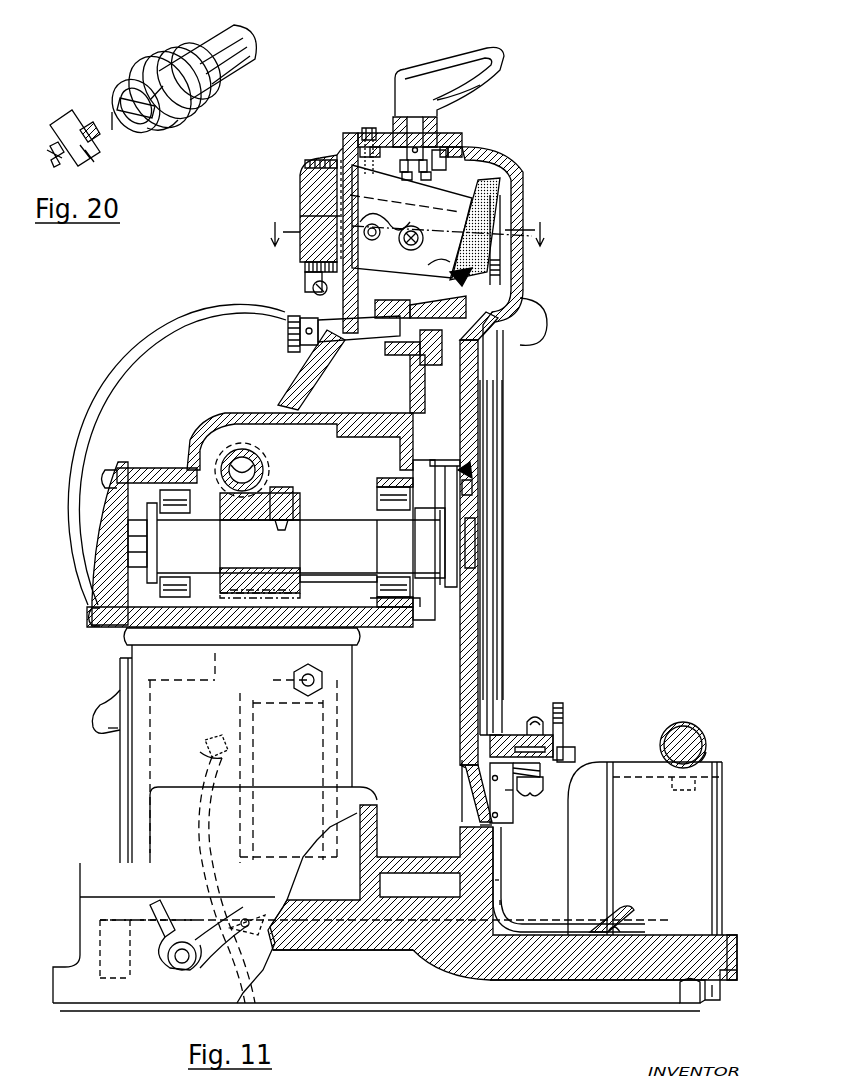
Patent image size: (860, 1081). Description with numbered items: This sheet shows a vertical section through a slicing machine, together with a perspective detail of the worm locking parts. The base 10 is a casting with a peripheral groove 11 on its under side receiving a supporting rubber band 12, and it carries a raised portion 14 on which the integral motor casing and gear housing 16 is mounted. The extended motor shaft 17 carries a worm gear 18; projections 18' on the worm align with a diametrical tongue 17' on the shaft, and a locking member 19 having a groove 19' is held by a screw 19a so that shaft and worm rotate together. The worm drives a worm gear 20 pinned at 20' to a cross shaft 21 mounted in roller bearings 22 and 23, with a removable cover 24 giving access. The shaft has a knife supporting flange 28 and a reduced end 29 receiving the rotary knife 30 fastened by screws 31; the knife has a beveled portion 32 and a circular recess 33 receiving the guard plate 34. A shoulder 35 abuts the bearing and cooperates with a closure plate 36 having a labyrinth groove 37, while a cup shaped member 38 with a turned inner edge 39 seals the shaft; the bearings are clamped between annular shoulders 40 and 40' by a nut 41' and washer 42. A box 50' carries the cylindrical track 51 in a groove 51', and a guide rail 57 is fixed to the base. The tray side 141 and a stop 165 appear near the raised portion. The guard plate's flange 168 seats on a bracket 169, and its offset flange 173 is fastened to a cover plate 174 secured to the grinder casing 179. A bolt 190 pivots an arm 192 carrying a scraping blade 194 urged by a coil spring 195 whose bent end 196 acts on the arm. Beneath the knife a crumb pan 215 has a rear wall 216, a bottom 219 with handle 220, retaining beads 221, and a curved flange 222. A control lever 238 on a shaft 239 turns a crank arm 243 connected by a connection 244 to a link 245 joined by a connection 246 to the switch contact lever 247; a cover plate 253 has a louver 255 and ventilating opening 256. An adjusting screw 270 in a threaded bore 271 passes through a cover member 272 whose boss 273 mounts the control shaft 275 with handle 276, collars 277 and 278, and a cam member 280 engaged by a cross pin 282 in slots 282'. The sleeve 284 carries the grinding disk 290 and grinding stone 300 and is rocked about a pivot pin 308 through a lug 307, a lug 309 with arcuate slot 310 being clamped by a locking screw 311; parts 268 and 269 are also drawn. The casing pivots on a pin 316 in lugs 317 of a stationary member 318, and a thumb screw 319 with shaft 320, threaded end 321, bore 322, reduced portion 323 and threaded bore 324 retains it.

In FIG. 11, the base 10 is at (694, 948).
In FIG. 11, the peripheral groove 11 is at (720, 992).
In FIG. 11, the supporting rubber band 12 is at (672, 1022).
In FIG. 11, the raised portion 14 is at (354, 728).
In FIG. 11, the motor casing and gear housing 16 is at (218, 420).
In FIG. 20, the motor shaft 17 is at (218, 62).
In FIG. 11, the motor shaft 17 is at (268, 467).
In FIG. 20, the diametrical tongue 17' is at (124, 102).
In FIG. 20, the worm gear 18 is at (173, 98).
In FIG. 11, the worm gear 18 is at (252, 464).
In FIG. 20, the projections 18' is at (137, 117).
In FIG. 20, the locking member 19 is at (63, 127).
In FIG. 20, the diametrical groove 19' is at (91, 121).
In FIG. 20, the screw 19a is at (50, 152).
In FIG. 11, the worm gear 20 is at (275, 540).
In FIG. 11, the pin 20' is at (304, 501).
In FIG. 11, the cross shaft 21 is at (330, 526).
In FIG. 11, the roller bearing 22 is at (168, 492).
In FIG. 11, the roller bearing 23 is at (385, 576).
In FIG. 11, the removable cover 24 is at (92, 597).
In FIG. 11, the knife supporting flange 28 is at (455, 590).
In FIG. 11, the reduced end 29 is at (478, 532).
In FIG. 11, the rotary knife 30 is at (474, 422).
In FIG. 11, the screws 31 is at (474, 490).
In FIG. 11, the beveled portion 32 is at (460, 760).
In FIG. 11, the circular recess 33 is at (505, 735).
In FIG. 11, the guard plate 34 is at (486, 645).
In FIG. 11, the shoulder 35 is at (414, 526).
In FIG. 11, the closure plate 36 is at (398, 627).
In FIG. 11, the surrounding groove 37 is at (424, 510).
In FIG. 11, the cup shaped member 38 is at (434, 455).
In FIG. 11, the inner edge 39 is at (470, 482).
In FIG. 11, the annular shoulder 40 is at (250, 601).
In FIG. 11, the annular shoulder 40' is at (338, 589).
In FIG. 11, the nut 41' is at (84, 543).
In FIG. 11, the washer 42 is at (146, 525).
In FIG. 11, the hollow rectangular box 50' is at (664, 848).
In FIG. 11, the track 51 is at (696, 735).
In FIG. 11, the groove 51' is at (731, 750).
In FIG. 11, the guide rail 57 is at (740, 943).
In FIG. 11, the upwardly extending side 141 is at (460, 783).
In FIG. 11, the stop 165 is at (320, 674).
In FIG. 11, the outwardly extending flange 168 is at (522, 735).
In FIG. 11, the bracket 169 is at (576, 752).
In FIG. 11, the offset flange 173 is at (510, 310).
In FIG. 11, the cover plate 174 is at (512, 252).
In FIG. 11, the grinder casing 179 is at (302, 172).
In FIG. 11, the bolt 190 is at (538, 795).
In FIG. 11, the arm 192 is at (512, 790).
In FIG. 11, the scraping blade 194 is at (507, 795).
In FIG. 11, the coil spring 195 is at (542, 776).
In FIG. 11, the bent end 196 is at (495, 790).
In FIG. 11, the crumb pan 215 is at (520, 926).
In FIG. 11, the rear wall 216 is at (498, 876).
In FIG. 11, the bottom 219 is at (578, 926).
In FIG. 11, the handle 220 is at (630, 909).
In FIG. 11, the bead 221 is at (620, 929).
In FIG. 11, the flange portion 222 is at (477, 823).
In FIG. 11, the control lever 238 is at (160, 922).
In FIG. 11, the shaft 239 is at (180, 965).
In FIG. 11, the crank arm 243 is at (224, 962).
In FIG. 11, the socket and cotter pin connection 244 is at (250, 930).
In FIG. 11, the link 245 is at (200, 854).
In FIG. 11, the pin and socket connection 246 is at (214, 740).
In FIG. 11, the contact lever 247 is at (200, 756).
In FIG. 11, the cover plate 253 is at (119, 834).
In FIG. 11, the louver 255 is at (98, 712).
In FIG. 11, the ventilating opening 256 is at (110, 732).
In FIG. 11, the wall 268 is at (340, 150).
In FIG. 11, the spline 269 is at (302, 200).
In FIG. 11, the screw 270 is at (362, 136).
In FIG. 11, the threaded bore 271 is at (345, 148).
In FIG. 11, the cover member 272 is at (440, 145).
In FIG. 11, the boss 273 is at (392, 128).
In FIG. 11, the control shaft 275 is at (412, 120).
In FIG. 11, the control handle 276 is at (490, 52).
In FIG. 11, the collar 277 is at (432, 112).
In FIG. 11, the collar 278 is at (428, 158).
In FIG. 11, the cam member 280 is at (410, 170).
In FIG. 11, the cross pin 282 is at (399, 160).
In FIG. 11, the elongated slots 282' is at (437, 175).
In FIG. 11, the cylindrical sleeve 284 is at (388, 220).
In FIG. 11, the grinding disk 290 is at (496, 228).
In FIG. 11, the grinding stone 300 is at (500, 190).
In FIG. 11, the depending lug 307 is at (430, 262).
In FIG. 11, the pivot pin 308 is at (412, 251).
In FIG. 11, the lug 309 is at (374, 242).
In FIG. 11, the arcuate slot 310 is at (390, 220).
In FIG. 11, the locking screw 311 is at (300, 208).
In FIG. 11, the pivot pin 316 is at (304, 282).
In FIG. 11, the lugs 317 is at (312, 289).
In FIG. 11, the stationary member 318 is at (309, 370).
In FIG. 11, the thumb screw 319 is at (288, 340).
In FIG. 11, the shaft 320 is at (358, 332).
In FIG. 11, the threaded end 321 is at (438, 303).
In FIG. 11, the bore 322 is at (436, 348).
In FIG. 11, the reduced portion 323 is at (400, 352).
In FIG. 11, the threaded bore 324 is at (381, 311).